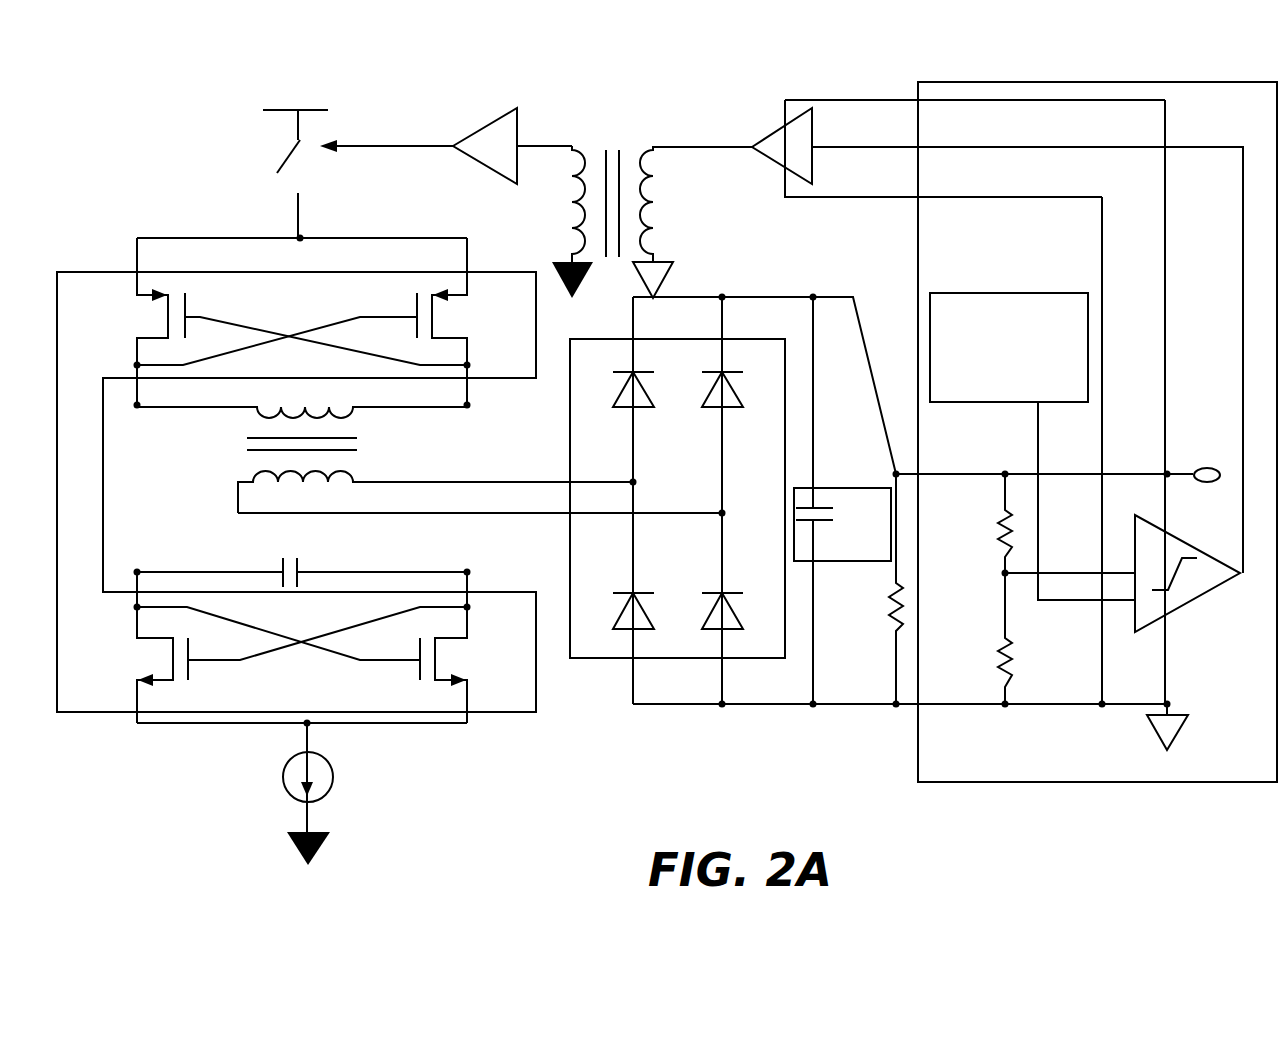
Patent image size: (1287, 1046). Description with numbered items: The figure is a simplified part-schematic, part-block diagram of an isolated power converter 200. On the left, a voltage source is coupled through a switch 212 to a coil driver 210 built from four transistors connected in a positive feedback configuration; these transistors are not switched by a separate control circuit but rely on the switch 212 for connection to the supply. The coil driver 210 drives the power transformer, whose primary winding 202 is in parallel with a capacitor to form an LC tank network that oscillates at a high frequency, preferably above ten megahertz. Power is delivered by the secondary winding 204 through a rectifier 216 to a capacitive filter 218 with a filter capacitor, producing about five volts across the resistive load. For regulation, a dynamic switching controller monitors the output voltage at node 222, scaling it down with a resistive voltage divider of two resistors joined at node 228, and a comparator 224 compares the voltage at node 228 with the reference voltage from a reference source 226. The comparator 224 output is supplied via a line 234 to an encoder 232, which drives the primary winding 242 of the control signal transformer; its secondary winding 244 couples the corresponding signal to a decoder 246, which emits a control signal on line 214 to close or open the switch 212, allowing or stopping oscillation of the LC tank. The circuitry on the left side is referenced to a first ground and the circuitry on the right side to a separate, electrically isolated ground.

The isolated power converter 200 is at (130, 88).
The primary winding 202 is at (257, 412).
The secondary winding 204 is at (317, 480).
The coil driver 210 is at (389, 510).
The switch 212 is at (280, 157).
The line 214 is at (377, 140).
The rectifier 216 is at (581, 660).
The capacitive filter 218 is at (838, 486).
The node 222 is at (1170, 472).
The comparator 224 is at (1173, 617).
The reference source 226 is at (983, 293).
The node 228 is at (1007, 577).
The encoder 232 is at (763, 123).
The line 234 is at (1243, 255).
The primary winding 242 is at (643, 213).
The secondary winding 244 is at (577, 232).
The decoder 246 is at (480, 123).